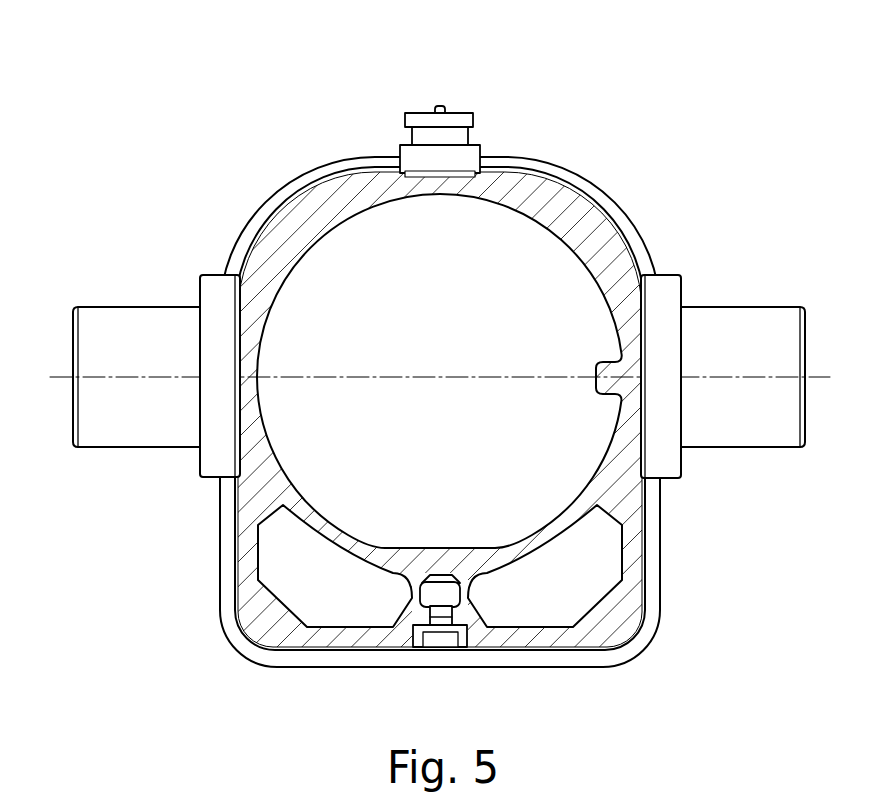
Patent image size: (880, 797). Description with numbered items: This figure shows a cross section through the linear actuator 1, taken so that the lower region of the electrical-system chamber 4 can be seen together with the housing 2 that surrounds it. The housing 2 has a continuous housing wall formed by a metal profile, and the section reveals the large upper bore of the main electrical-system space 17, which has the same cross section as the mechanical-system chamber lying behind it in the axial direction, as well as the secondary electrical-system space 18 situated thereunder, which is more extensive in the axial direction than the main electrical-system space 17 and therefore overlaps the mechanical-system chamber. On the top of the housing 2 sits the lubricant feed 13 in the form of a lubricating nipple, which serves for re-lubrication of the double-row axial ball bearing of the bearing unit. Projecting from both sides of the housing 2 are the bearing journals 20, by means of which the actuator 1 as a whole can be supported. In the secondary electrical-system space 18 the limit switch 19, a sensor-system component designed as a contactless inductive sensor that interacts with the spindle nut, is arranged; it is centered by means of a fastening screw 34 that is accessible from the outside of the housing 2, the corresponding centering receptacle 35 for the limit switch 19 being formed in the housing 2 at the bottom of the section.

The actuator 1 is at (440, 375).
The housing 2 is at (593, 203).
The electrical-system chamber 4 is at (387, 290).
The lubricant feed 13 is at (458, 112).
The main electrical-system space 17 is at (439, 331).
The secondary electrical-system space 18 is at (551, 597).
The limit switch 19 is at (436, 653).
The bearing journals 20 is at (740, 447).
The fastening screw 34 is at (445, 647).
The centering receptacle 35 is at (448, 610).